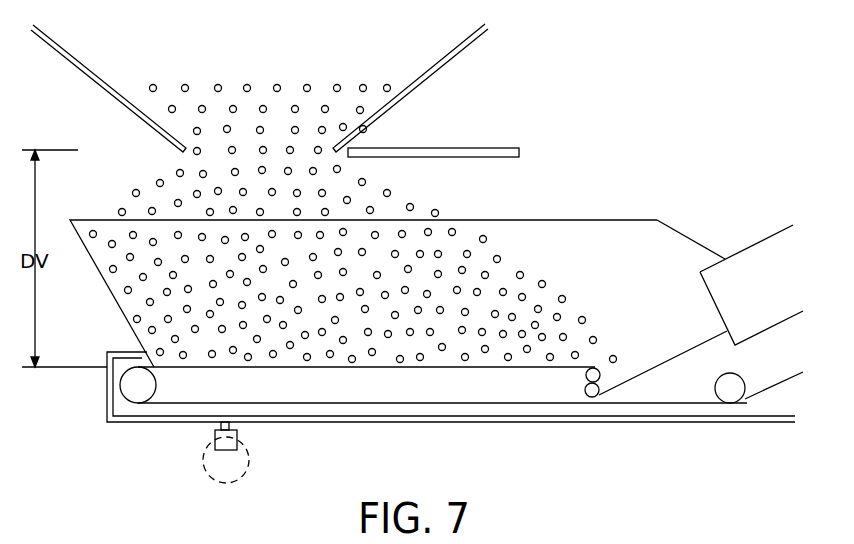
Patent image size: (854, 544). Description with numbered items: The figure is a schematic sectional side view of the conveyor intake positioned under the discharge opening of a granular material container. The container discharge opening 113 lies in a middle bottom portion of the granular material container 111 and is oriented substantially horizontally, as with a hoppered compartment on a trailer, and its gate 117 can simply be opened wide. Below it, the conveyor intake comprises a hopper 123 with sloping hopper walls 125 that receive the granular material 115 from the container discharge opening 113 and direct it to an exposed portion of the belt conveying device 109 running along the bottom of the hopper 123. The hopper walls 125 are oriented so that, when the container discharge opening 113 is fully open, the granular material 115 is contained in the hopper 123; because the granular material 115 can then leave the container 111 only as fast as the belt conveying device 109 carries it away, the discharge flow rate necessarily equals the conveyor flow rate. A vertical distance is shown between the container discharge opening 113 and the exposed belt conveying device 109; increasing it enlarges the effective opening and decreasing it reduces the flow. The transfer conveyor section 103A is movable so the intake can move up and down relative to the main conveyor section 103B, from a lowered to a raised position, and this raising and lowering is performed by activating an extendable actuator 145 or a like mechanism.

The granular material container 111 is at (457, 58).
The container discharge opening 113 is at (214, 150).
The granular material 115 is at (390, 191).
The gate 117 is at (456, 147).
The hopper walls 125 is at (520, 220).
The hopper 123 is at (624, 220).
The transfer conveyor section 103A is at (128, 424).
The main conveyor section 103B is at (780, 232).
The belt conveying device 109 is at (438, 368).
The extendable actuator 145 is at (237, 437).